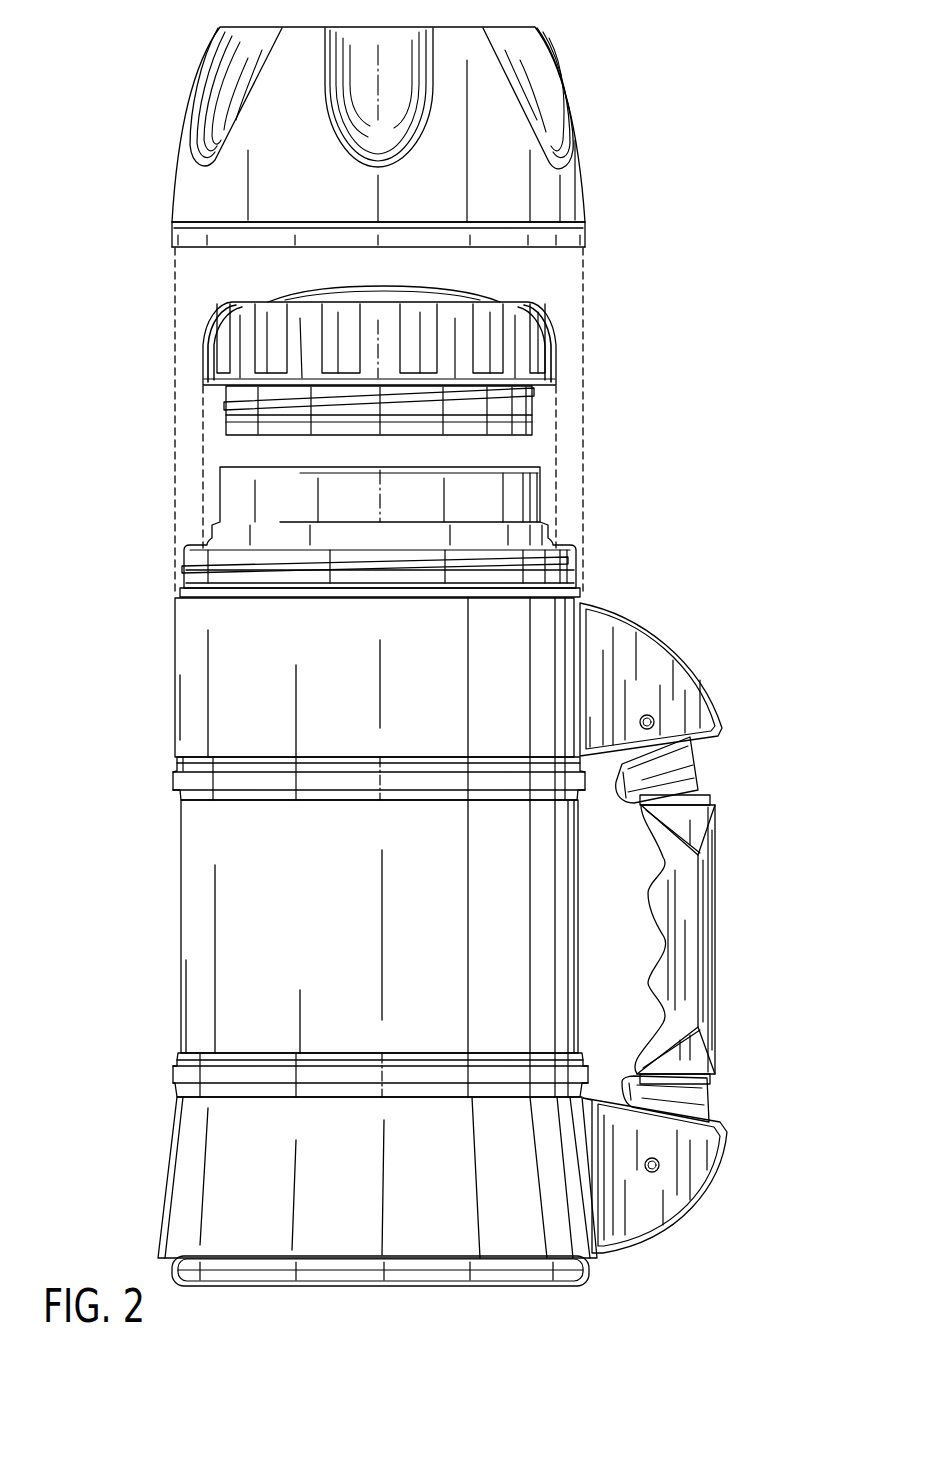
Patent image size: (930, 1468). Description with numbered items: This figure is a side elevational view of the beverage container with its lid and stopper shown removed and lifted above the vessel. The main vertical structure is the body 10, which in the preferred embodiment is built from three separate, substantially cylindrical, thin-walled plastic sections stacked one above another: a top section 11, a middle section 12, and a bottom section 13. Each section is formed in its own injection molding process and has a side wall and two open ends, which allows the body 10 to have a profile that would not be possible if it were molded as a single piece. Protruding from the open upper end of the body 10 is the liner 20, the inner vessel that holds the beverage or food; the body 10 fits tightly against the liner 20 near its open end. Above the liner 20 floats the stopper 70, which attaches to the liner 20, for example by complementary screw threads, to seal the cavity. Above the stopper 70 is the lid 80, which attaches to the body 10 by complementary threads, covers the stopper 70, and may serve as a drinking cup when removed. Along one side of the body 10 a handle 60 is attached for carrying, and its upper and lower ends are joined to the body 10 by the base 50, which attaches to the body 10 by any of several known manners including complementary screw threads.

The body 10 is at (176, 618).
The top section 11 is at (176, 703).
The middle section 12 is at (181, 937).
The bottom section 13 is at (168, 1170).
The liner 20 is at (210, 492).
The base 50 is at (595, 1262).
The handle 60 is at (740, 886).
The stopper 70 is at (499, 301).
The lid 80 is at (586, 177).